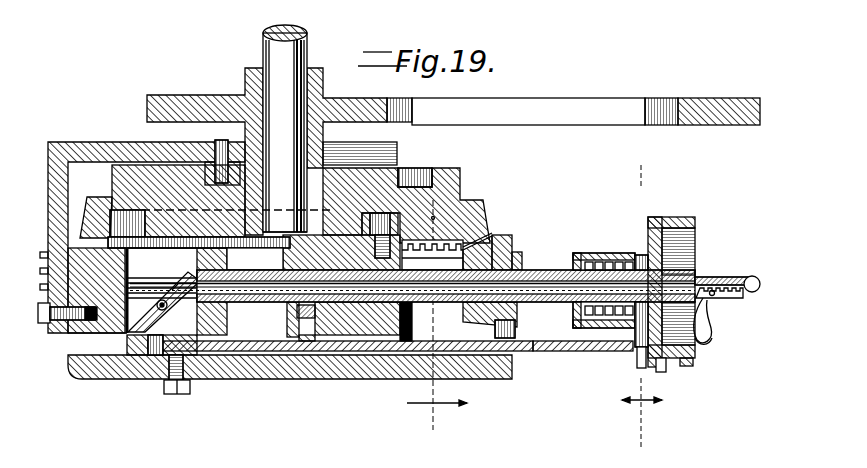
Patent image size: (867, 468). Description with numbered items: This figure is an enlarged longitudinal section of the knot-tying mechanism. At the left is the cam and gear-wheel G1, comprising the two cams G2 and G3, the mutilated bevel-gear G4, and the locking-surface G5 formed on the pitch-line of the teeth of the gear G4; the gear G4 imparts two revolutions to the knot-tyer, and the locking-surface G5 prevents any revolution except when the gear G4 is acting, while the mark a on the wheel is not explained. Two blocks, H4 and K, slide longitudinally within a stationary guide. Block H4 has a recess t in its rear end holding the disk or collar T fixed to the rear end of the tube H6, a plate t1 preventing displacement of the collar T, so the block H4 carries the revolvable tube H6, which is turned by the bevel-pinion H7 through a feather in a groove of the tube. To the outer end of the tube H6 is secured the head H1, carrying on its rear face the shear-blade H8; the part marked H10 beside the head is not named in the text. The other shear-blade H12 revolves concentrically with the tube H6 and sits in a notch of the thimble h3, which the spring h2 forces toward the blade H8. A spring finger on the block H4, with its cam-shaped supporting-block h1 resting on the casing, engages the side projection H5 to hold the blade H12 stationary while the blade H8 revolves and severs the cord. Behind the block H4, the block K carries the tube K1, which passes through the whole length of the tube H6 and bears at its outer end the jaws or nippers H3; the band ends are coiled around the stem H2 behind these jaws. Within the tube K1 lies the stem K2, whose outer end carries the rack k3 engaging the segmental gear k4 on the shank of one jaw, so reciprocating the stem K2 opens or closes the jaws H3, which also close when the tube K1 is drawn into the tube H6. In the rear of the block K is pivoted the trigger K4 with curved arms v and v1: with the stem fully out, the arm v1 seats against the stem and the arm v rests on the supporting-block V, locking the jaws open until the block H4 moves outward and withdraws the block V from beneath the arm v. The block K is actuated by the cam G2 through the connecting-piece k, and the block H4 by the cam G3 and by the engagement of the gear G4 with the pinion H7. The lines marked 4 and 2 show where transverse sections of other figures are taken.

The connecting-piece k is at (52, 174).
The cam and gear-wheel G1 is at (458, 203).
The cam G2 is at (210, 170).
The cam G3 is at (150, 203).
The mutilated bevel-gear G4 is at (490, 243).
The locking-surface G5 is at (82, 236).
The head H1 is at (686, 294).
The stem H2 is at (702, 280).
The jaws or nippers H3 is at (763, 280).
The block H4 is at (360, 341).
The projection H5 is at (709, 336).
The tube H6 is at (533, 272).
The bevel-pinion H7 is at (513, 252).
The shear-blade H8 is at (643, 255).
The cap H10 is at (684, 215).
The shear-blade H12 is at (639, 352).
The cam-shaped supporting-block h1 is at (506, 352).
The spring h2 is at (603, 256).
The thimble h3 is at (577, 318).
The rack k3 is at (719, 297).
The segmental gear k4 is at (708, 320).
The block K is at (220, 335).
The tube K1 is at (50, 345).
The stem K2 is at (252, 290).
The trigger K4 is at (162, 281).
The disk or collar T is at (301, 337).
The recess t is at (311, 335).
The plate t1 is at (296, 318).
The supporting-block V is at (127, 356).
The trigger arm v is at (153, 307).
The trigger arm v1 is at (181, 281).
The point a is at (431, 217).
The section line 3 4 is at (437, 415).
The section line 1 2 is at (642, 318).